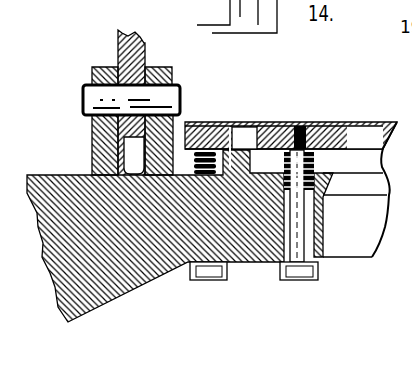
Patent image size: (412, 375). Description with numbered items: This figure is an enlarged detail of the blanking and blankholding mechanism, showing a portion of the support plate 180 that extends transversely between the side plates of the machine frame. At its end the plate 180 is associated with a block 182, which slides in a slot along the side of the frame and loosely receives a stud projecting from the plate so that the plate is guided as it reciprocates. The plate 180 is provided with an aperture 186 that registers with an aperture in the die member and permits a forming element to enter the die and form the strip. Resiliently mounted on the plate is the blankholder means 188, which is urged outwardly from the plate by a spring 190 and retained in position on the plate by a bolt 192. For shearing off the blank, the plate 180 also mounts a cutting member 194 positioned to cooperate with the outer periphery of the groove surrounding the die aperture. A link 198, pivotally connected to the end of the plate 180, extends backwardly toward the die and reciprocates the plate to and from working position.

The support plate 180 is at (135, 277).
The block 182 is at (60, 0).
The aperture 186 is at (325, 247).
The blankholder means 188 is at (278, 128).
The spring 190 is at (322, 150).
The bolt 192 is at (298, 237).
The cutting member 194 is at (242, 127).
The link 198 is at (118, 59).